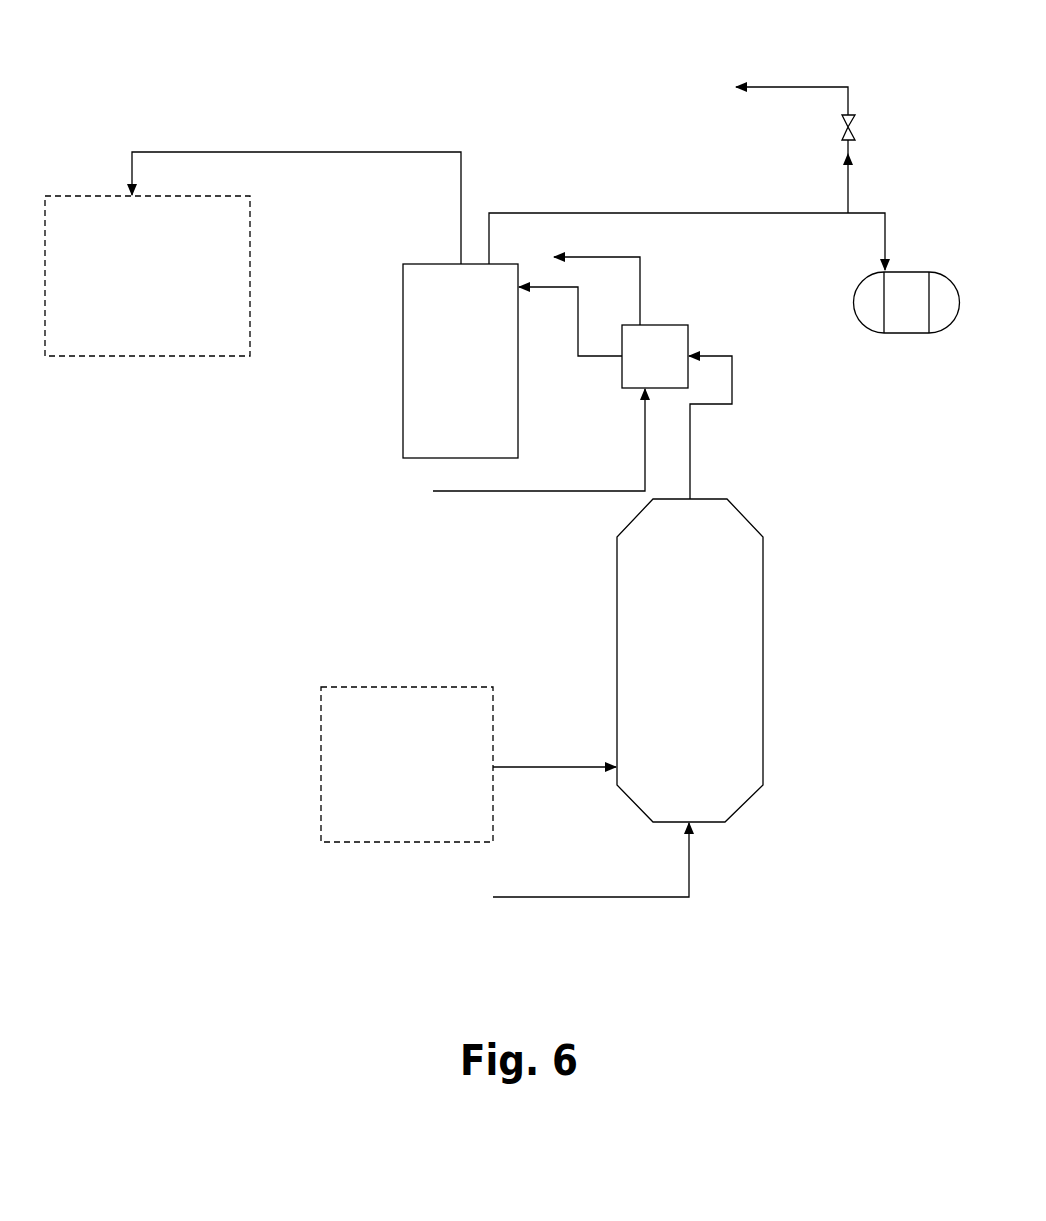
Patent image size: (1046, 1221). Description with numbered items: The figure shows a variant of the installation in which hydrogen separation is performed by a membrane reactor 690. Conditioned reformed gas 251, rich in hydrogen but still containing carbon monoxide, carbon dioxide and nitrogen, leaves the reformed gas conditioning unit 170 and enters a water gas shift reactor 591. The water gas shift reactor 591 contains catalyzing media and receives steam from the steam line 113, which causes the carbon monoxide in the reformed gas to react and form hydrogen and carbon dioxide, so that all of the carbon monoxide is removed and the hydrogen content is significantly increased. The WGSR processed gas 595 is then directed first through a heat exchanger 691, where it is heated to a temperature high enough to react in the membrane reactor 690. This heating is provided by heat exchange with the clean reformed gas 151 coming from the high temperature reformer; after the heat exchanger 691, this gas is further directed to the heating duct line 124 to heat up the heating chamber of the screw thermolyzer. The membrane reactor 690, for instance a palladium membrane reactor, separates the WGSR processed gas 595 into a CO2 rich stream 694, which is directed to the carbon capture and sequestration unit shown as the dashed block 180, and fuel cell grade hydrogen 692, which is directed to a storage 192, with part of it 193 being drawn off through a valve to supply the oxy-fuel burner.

The downstream unit 180 is at (147, 276).
The reformed gas conditioning unit 170 is at (407, 764).
The membrane reactor 690 is at (460, 361).
The heat exchanger 691 is at (655, 325).
The storage 192 is at (905, 333).
The water gas shift reactor 591 is at (763, 660).
The CO2 rich stream 694 is at (283, 151).
The fuel cell grade H2 692 is at (707, 212).
The part of fuel cell grade H2 193 is at (795, 88).
The heating duct line 124 is at (640, 278).
The WGSR processed gas 595 is at (689, 430).
The clean reformed gas 151 is at (567, 489).
The conditioned reformed gas 251 is at (561, 770).
The steam line 113 is at (690, 870).